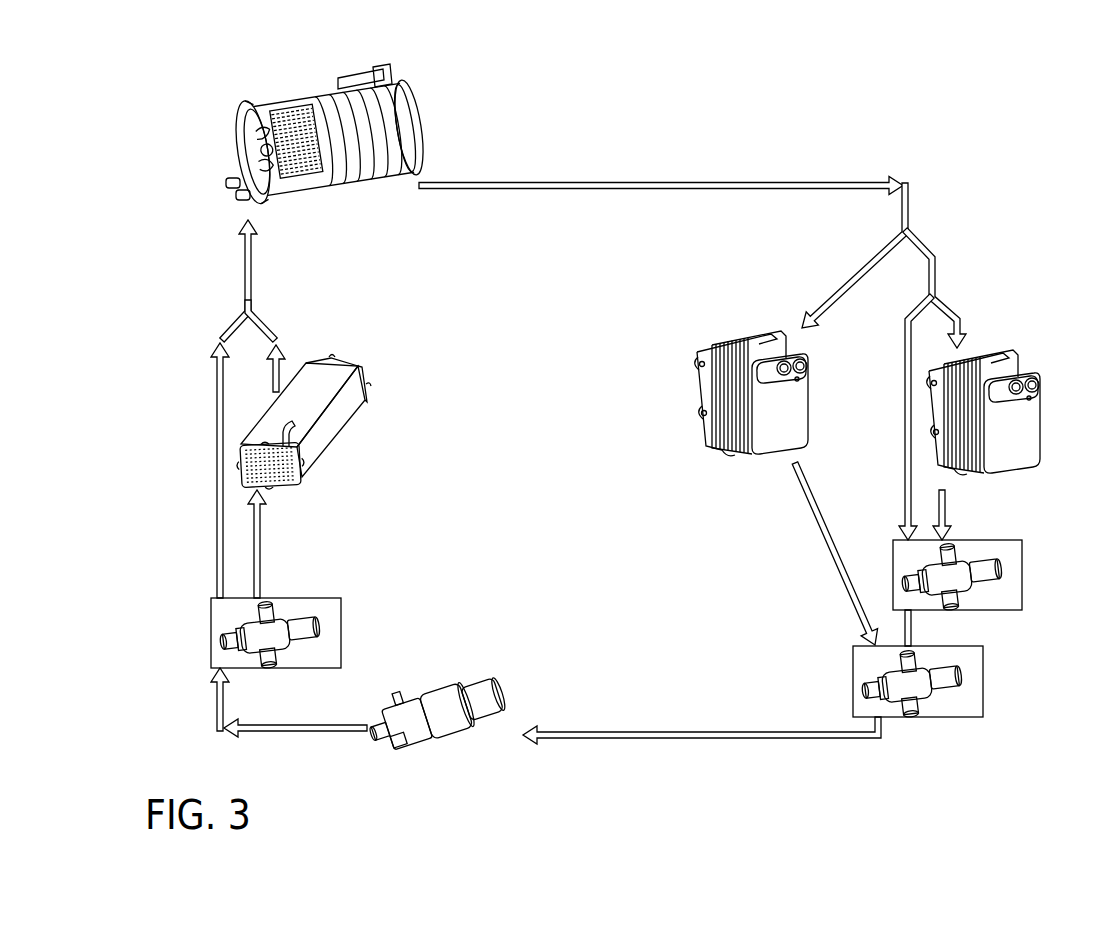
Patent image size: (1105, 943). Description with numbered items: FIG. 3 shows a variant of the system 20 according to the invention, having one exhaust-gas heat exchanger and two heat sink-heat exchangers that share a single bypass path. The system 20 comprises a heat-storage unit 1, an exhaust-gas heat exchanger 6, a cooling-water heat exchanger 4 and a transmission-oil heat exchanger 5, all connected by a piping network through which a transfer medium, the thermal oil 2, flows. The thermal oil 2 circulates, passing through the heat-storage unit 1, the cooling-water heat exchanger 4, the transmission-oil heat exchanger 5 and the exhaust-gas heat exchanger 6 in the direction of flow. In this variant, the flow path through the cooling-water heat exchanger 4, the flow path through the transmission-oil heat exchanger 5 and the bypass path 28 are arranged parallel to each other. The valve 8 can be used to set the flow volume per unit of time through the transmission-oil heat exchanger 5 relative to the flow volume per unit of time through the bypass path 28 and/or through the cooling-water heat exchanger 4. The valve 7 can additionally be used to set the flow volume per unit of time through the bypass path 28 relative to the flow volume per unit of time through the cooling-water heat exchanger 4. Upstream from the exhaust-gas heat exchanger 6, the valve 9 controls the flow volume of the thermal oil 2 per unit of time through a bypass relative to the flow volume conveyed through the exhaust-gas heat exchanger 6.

The heat-storage unit 1 is at (414, 112).
The thermal oil 2 is at (592, 184).
The cooling-water heat exchanger 4 is at (1030, 428).
The transmission-oil heat exchanger 5 is at (705, 387).
The exhaust-gas heat exchanger 6 is at (327, 430).
The valve 7 is at (1021, 572).
The valve 8 is at (983, 683).
The valve 9 is at (335, 626).
The system 20 is at (903, 743).
The bypass path 28 is at (907, 438).